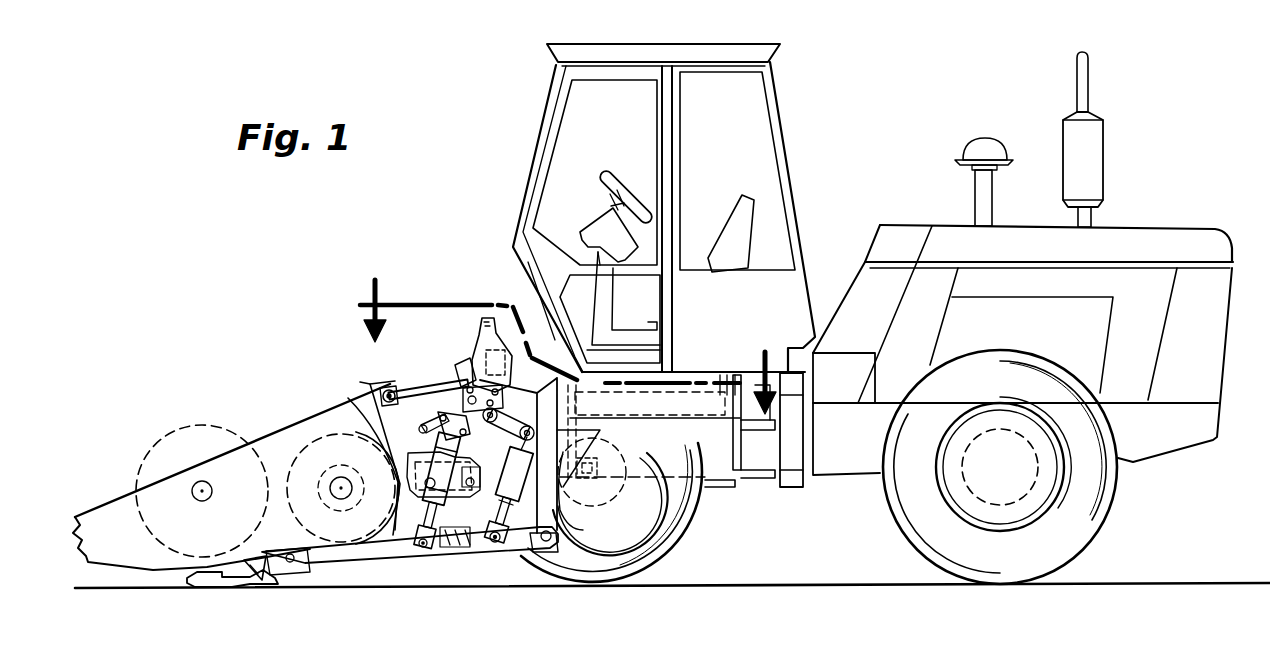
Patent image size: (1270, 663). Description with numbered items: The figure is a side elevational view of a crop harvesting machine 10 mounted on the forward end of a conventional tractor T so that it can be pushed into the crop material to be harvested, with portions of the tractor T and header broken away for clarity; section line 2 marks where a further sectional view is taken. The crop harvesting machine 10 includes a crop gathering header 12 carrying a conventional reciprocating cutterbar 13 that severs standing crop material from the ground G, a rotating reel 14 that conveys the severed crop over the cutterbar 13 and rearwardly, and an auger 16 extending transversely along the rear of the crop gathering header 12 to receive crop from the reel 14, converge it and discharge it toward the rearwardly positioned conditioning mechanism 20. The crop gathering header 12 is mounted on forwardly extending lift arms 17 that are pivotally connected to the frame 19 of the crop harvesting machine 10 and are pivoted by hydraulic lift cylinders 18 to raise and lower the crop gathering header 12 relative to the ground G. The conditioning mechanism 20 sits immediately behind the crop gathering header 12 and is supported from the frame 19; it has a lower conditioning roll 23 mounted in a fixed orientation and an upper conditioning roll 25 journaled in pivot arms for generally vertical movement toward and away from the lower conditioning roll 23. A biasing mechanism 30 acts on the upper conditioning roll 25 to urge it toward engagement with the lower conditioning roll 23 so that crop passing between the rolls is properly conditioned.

The crop harvesting machine 10 is at (192, 326).
The crop gathering header 12 is at (282, 436).
The reciprocating cutterbar 13 is at (200, 582).
The rotating reel 14 is at (157, 445).
The auger 16 is at (296, 458).
The lift arms 17 is at (322, 557).
The hydraulic lift cylinders 18 is at (575, 503).
The frame 19 is at (553, 487).
The conditioning mechanism 20 is at (472, 535).
The lower conditioning roll 23 is at (408, 527).
The upper conditioning roll 25 is at (355, 410).
The biasing mechanism 30 is at (428, 405).
The section line 2- 2 is at (568, 332).
The tractor T is at (787, 150).
The ground G is at (1150, 583).